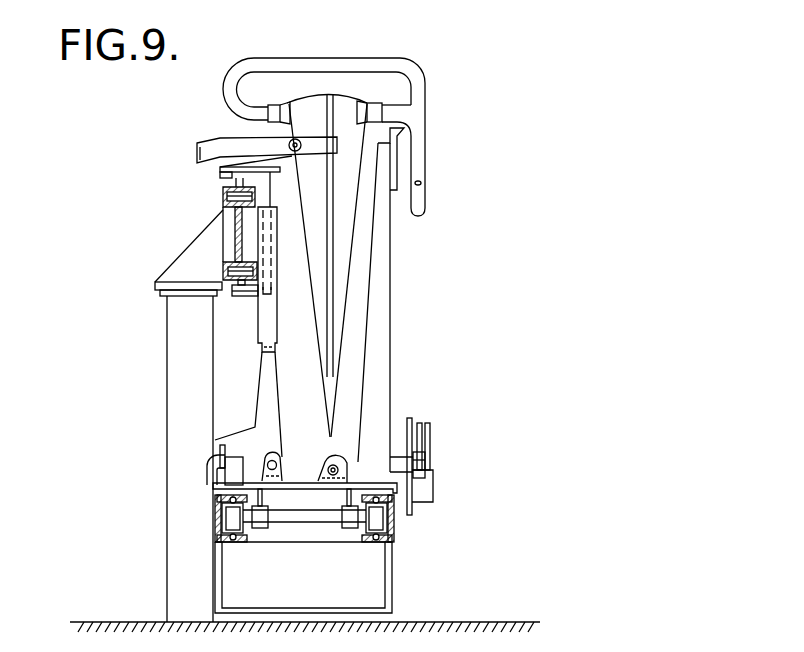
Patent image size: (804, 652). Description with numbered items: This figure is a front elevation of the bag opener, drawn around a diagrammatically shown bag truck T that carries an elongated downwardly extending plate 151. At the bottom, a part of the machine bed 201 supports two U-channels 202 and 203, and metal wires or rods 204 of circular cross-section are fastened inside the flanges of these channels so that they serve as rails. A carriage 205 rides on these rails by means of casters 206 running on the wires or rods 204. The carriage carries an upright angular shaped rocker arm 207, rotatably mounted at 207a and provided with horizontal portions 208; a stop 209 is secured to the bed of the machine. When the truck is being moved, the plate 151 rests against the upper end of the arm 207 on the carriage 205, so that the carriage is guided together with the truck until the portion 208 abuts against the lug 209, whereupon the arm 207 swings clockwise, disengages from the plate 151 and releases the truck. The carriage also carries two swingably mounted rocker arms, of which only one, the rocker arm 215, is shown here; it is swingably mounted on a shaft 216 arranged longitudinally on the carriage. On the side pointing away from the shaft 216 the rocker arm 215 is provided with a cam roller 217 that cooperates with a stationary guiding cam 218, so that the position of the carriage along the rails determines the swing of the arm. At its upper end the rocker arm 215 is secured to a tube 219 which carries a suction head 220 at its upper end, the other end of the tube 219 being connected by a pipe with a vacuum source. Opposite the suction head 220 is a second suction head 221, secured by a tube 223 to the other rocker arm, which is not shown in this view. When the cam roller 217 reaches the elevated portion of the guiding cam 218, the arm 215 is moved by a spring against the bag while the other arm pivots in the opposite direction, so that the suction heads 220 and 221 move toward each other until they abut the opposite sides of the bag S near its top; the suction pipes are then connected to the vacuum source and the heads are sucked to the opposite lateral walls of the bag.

The plate 151 is at (265, 328).
The machine bed 201 is at (392, 590).
The U-channel 202 is at (388, 548).
The U-channel 203 is at (218, 543).
The wires or rods 204 is at (218, 503).
The carriage 205 is at (214, 486).
The casters 206 is at (370, 525).
The rocker arm 207 is at (265, 363).
The pivot 207a is at (268, 456).
The horizontal portions 208 is at (220, 445).
The stop 209 is at (208, 456).
The rocker arm 215 is at (392, 273).
The shaft 216 is at (340, 465).
The cam roller 217 is at (424, 453).
The guiding cam 218 is at (420, 430).
The tube 219 is at (403, 115).
The suction head 220 is at (382, 108).
The suction head 221 is at (278, 103).
The tube 223 is at (373, 61).
The bag S is at (350, 228).
The bag truck T is at (218, 183).